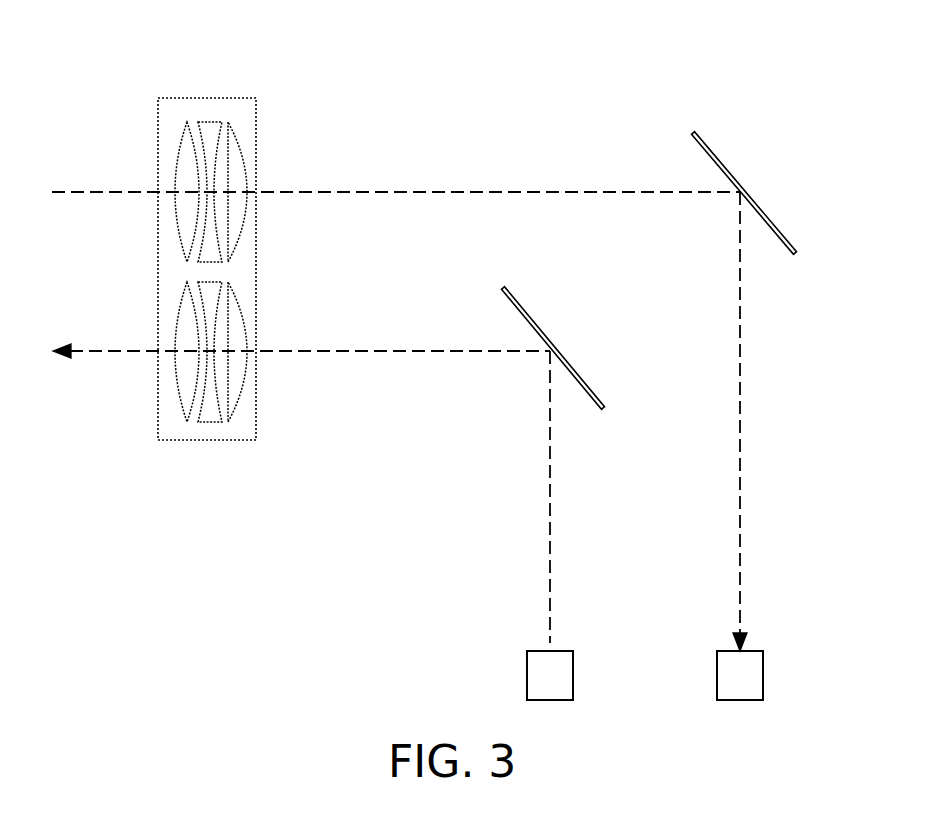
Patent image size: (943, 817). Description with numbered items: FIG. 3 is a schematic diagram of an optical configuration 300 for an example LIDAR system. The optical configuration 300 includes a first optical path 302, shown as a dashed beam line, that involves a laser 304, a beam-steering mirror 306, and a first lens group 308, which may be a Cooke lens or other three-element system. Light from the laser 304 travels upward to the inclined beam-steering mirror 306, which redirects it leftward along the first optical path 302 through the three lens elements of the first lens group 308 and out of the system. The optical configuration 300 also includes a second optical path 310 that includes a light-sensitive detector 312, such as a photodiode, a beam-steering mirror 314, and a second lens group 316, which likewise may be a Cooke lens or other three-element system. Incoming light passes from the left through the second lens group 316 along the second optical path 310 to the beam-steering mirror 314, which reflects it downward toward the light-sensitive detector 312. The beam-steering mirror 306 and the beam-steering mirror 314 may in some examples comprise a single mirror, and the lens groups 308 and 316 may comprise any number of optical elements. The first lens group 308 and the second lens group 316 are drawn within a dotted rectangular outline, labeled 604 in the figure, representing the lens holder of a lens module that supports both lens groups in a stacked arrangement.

The optical configuration 300 is at (745, 62).
The first optical path 302 is at (427, 355).
The laser 304 is at (527, 684).
The beam-steering mirror 306 is at (535, 320).
The first lens group 308 is at (258, 380).
The second optical path 310 is at (443, 195).
The light-sensitive detector 312 is at (717, 682).
The beam-steering mirror 314 is at (722, 160).
The second lens group 316 is at (258, 154).
The lens housing 604 is at (205, 441).